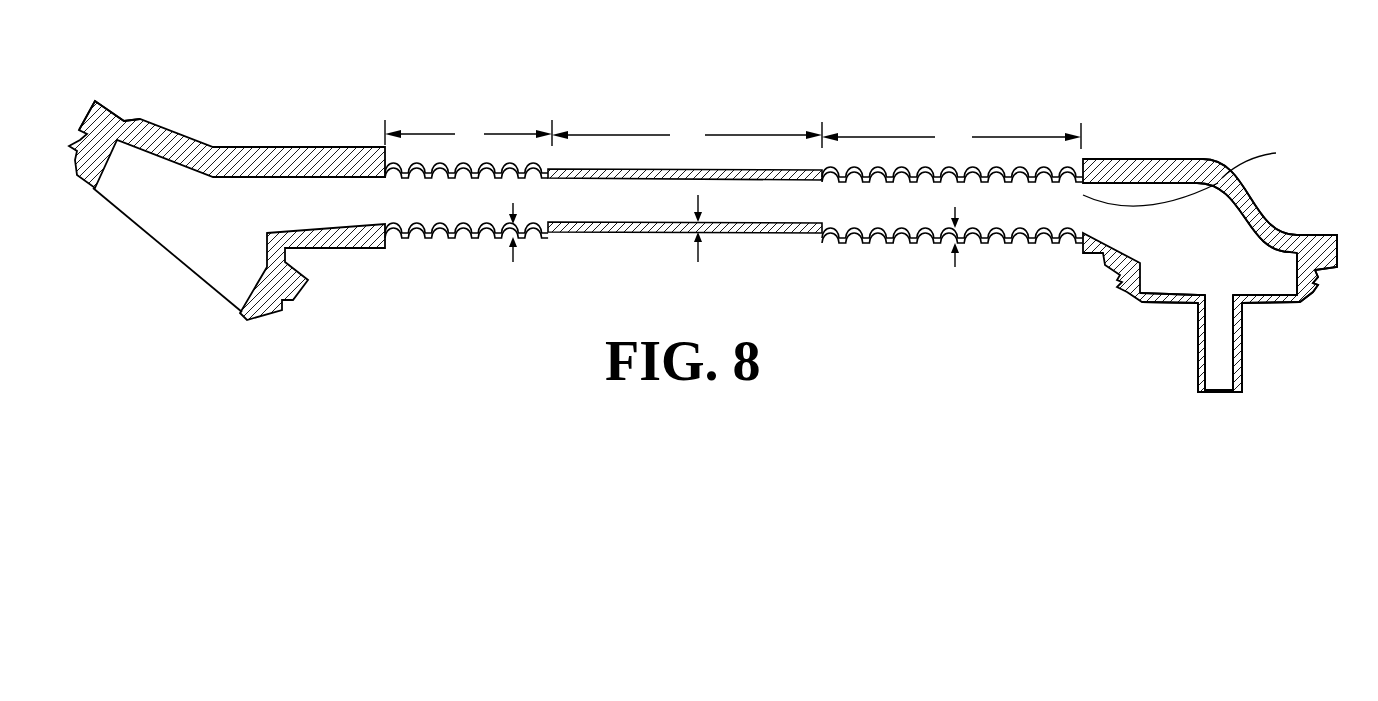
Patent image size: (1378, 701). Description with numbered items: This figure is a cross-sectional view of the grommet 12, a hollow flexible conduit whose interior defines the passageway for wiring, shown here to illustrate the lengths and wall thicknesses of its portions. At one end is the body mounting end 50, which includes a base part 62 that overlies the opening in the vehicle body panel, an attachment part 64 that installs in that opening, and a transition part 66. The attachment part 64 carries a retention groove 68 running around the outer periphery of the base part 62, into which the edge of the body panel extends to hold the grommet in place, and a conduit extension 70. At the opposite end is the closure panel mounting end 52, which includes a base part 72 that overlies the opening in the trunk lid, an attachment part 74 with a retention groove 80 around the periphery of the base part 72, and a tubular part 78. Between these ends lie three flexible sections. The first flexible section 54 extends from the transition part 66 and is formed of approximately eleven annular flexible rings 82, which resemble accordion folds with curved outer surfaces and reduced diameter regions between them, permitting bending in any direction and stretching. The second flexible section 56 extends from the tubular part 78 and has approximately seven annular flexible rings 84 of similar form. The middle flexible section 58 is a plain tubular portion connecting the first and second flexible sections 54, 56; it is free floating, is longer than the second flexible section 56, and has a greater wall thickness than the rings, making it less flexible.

The grommet 12 is at (745, 74).
The body mounting end 50 is at (1128, 170).
The closure panel mounting end 52 is at (219, 146).
The first flexible section 54 is at (917, 241).
The second flexible section 56 is at (430, 236).
The middle flexible section 58 is at (643, 233).
The base part 62 is at (1318, 235).
The attachment part 64 is at (1303, 298).
The transition part 66 is at (1274, 224).
The retention groove 68 is at (1318, 286).
The conduit extension 70 is at (1198, 367).
The base part 72 is at (106, 117).
The attachment part 74 is at (245, 313).
The tubular part 78 is at (313, 158).
The retention groove 80 is at (272, 316).
The annular flexible rings 82 is at (1051, 240).
The annular flexible rings 84 is at (467, 238).